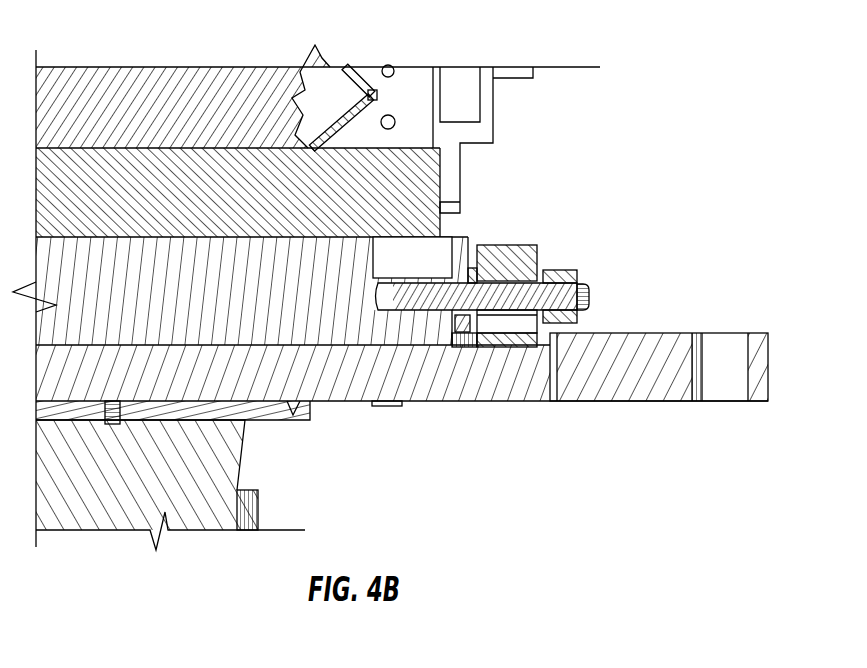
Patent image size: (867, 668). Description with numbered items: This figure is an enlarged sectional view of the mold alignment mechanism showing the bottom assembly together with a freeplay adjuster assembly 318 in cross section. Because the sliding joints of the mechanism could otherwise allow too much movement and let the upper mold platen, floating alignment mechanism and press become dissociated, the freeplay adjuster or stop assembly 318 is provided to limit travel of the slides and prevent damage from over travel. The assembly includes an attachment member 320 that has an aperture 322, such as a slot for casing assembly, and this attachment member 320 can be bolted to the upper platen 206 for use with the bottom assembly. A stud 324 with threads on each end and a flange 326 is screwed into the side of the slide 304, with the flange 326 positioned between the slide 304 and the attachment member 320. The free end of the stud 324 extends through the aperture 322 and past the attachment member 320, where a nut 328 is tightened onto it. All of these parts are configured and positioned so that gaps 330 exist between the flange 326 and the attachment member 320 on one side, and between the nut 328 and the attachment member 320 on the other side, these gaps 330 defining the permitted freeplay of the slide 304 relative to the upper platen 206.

The upper platen 206 is at (650, 382).
The slide 304 is at (257, 306).
The freeplay adjuster assembly 318 is at (553, 263).
The attachment member 320 is at (517, 245).
The aperture 322 is at (490, 348).
The stud 324 is at (477, 297).
The flange 326 is at (460, 272).
The nut 328 is at (570, 333).
The gaps 330 is at (470, 277).